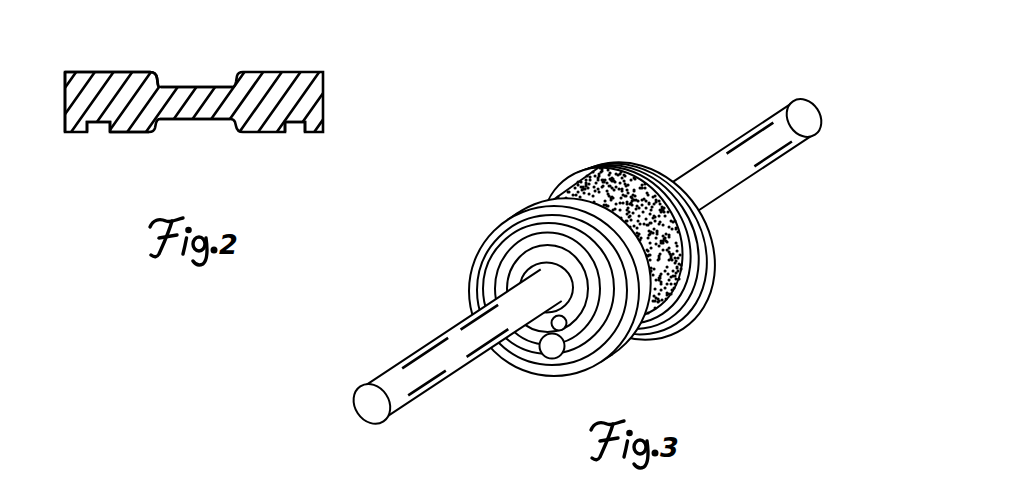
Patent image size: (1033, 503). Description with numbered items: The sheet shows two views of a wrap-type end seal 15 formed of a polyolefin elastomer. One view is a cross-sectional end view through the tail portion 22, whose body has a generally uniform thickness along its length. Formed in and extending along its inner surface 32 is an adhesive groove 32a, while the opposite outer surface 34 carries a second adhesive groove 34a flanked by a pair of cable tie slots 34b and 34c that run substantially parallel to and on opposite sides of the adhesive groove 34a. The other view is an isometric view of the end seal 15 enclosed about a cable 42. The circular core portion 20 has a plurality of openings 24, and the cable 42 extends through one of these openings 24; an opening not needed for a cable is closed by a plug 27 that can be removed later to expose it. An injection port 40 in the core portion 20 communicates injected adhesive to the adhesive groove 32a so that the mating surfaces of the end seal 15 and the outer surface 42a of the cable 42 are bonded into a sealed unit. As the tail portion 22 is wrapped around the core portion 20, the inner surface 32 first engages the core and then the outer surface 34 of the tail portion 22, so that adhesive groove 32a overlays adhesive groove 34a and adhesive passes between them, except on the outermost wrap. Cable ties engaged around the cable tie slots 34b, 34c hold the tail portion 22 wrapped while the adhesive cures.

In FIG. 3, the end seal 15 is at (563, 238).
In FIG. 3, the core portion 20 is at (536, 262).
In FIG. 2, the tail portion 22 is at (328, 98).
In FIG. 3, the tail portion 22 is at (713, 238).
In FIG. 3, the openings 24 is at (486, 297).
In FIG. 3, the plug 27 is at (550, 355).
In FIG. 2, the inner surface 32 is at (103, 70).
In FIG. 2, the adhesive groove 32a is at (188, 88).
In FIG. 2, the outer surface 34 is at (127, 132).
In FIG. 2, the adhesive groove 34a is at (182, 121).
In FIG. 3, the adhesive groove 34a is at (656, 285).
In FIG. 2, the cable tie slot 34b is at (289, 132).
In FIG. 2, the cable tie slot 34c is at (99, 129).
In FIG. 3, the injection port 40 is at (563, 330).
In FIG. 3, the cable 42 is at (430, 349).
In FIG. 3, the outer surface of cable 42a is at (400, 372).